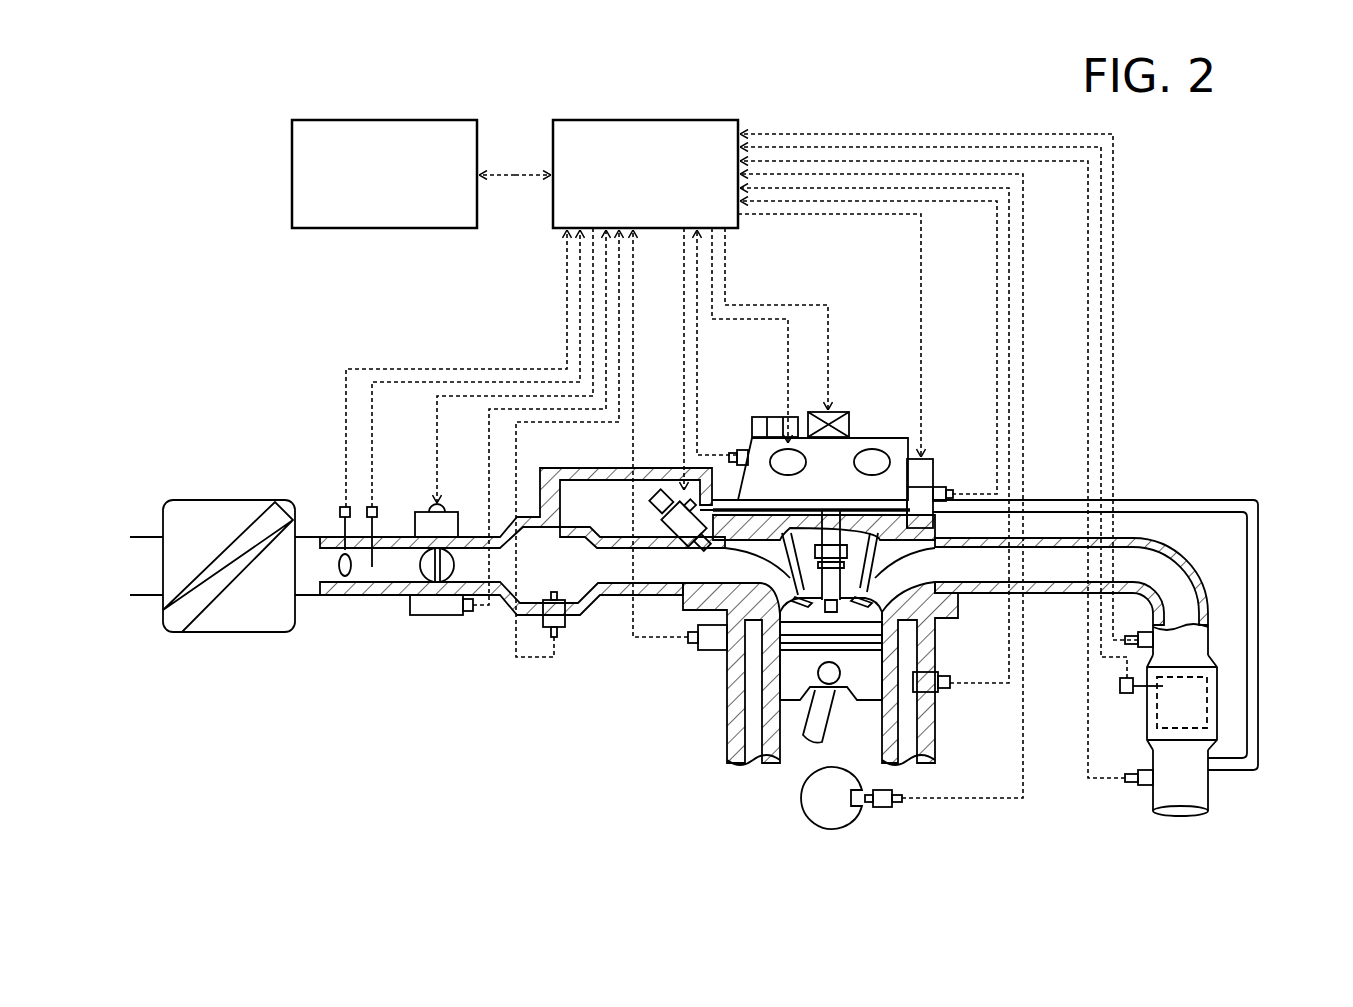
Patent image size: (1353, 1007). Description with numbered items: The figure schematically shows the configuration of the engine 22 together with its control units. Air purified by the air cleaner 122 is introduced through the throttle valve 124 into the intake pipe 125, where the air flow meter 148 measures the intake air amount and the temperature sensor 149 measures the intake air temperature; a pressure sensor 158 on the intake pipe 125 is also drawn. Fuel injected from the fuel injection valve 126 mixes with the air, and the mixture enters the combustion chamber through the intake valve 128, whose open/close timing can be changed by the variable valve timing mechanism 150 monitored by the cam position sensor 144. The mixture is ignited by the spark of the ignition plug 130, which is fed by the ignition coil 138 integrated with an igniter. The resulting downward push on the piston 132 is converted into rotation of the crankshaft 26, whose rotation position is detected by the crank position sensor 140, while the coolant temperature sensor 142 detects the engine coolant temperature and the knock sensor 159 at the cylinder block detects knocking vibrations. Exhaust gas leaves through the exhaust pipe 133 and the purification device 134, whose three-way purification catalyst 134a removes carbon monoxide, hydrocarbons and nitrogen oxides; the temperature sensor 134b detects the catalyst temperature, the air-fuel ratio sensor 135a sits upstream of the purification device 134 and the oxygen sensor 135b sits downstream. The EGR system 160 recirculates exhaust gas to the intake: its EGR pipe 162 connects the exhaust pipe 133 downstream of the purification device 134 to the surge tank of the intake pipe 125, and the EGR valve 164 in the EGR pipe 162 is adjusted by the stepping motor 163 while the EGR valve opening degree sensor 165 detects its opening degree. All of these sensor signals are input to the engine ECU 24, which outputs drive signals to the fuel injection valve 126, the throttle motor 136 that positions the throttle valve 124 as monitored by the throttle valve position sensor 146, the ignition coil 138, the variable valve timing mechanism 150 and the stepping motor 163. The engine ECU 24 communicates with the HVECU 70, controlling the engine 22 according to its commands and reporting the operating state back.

The HVECU 70 is at (392, 120).
The engine ECU 24 is at (648, 120).
The engine 22 is at (814, 555).
The crankshaft 26 is at (800, 800).
The air cleaner 122 is at (228, 500).
The throttle valve 124 is at (447, 583).
The intake pipe 125 is at (380, 597).
The fuel injection valve 126 is at (660, 488).
The intake valve 128 is at (797, 600).
The ignition plug 130 is at (830, 583).
The piston 132 is at (792, 683).
The exhaust pipe 133 is at (974, 597).
The purification device 134 is at (1122, 702).
The purification catalyst 134a is at (1148, 738).
The temperature sensor 134b is at (1119, 685).
The air-fuel ratio sensor 135a is at (1123, 634).
The oxygen sensor 135b is at (1145, 787).
The throttle motor 136 is at (452, 508).
The ignition coil 138 is at (845, 410).
The crank position sensor 140 is at (882, 810).
The coolant temperature sensor 142 is at (941, 693).
The cam position sensor 144 is at (740, 448).
The throttle valve position sensor 146 is at (433, 617).
The air flow meter 148 is at (337, 509).
The temperature sensor 149 is at (379, 509).
The variable valve timing mechanism 150 is at (870, 437).
The intake pressure sensor 158 is at (565, 628).
The knock sensor 159 is at (713, 648).
The EGR system 160 is at (1123, 593).
The EGR pipe 162 is at (1262, 630).
The stepping motor 163 is at (935, 461).
The EGR valve 164 is at (936, 518).
The EGR valve opening degree sensor 165 is at (946, 487).